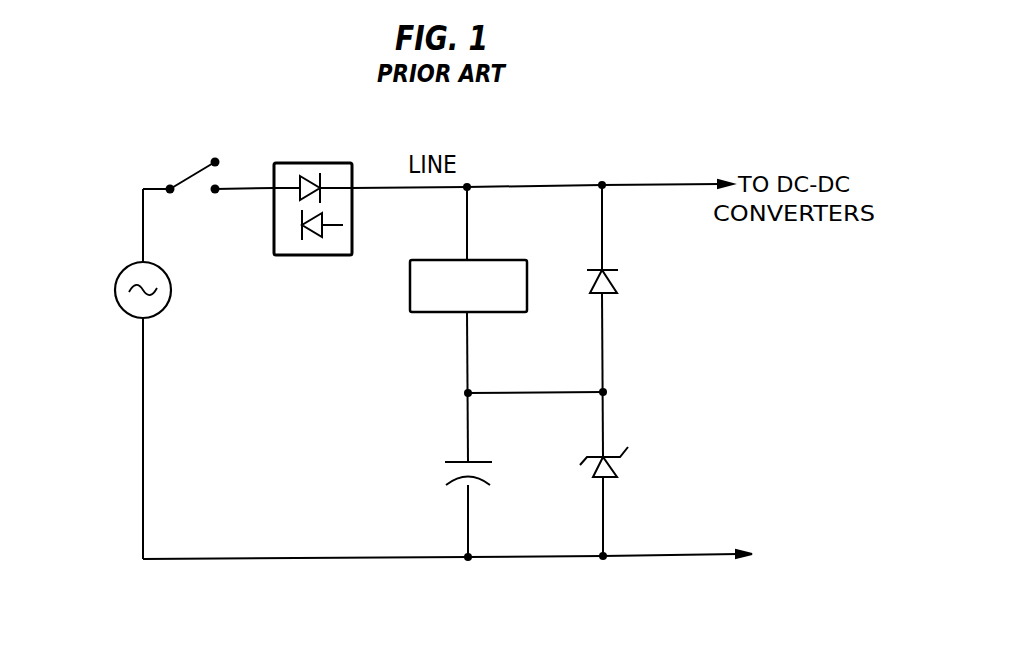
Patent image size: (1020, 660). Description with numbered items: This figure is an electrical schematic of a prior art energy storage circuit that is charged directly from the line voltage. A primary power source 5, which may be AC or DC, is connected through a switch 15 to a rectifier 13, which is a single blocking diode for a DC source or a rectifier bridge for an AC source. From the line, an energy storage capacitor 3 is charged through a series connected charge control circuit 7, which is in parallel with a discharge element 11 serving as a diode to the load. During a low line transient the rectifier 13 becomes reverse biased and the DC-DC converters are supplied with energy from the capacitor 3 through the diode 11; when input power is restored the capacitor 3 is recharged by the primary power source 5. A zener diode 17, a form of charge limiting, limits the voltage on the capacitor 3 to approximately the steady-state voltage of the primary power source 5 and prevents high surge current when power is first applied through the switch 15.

The energy storage capacitor 3 is at (450, 449).
The primary power source 5 is at (165, 322).
The charge control circuit 7 is at (400, 294).
The discharge element 11 is at (634, 276).
The rectifier 13 is at (307, 156).
The switch 15 is at (192, 176).
The zener diode 17 is at (636, 462).